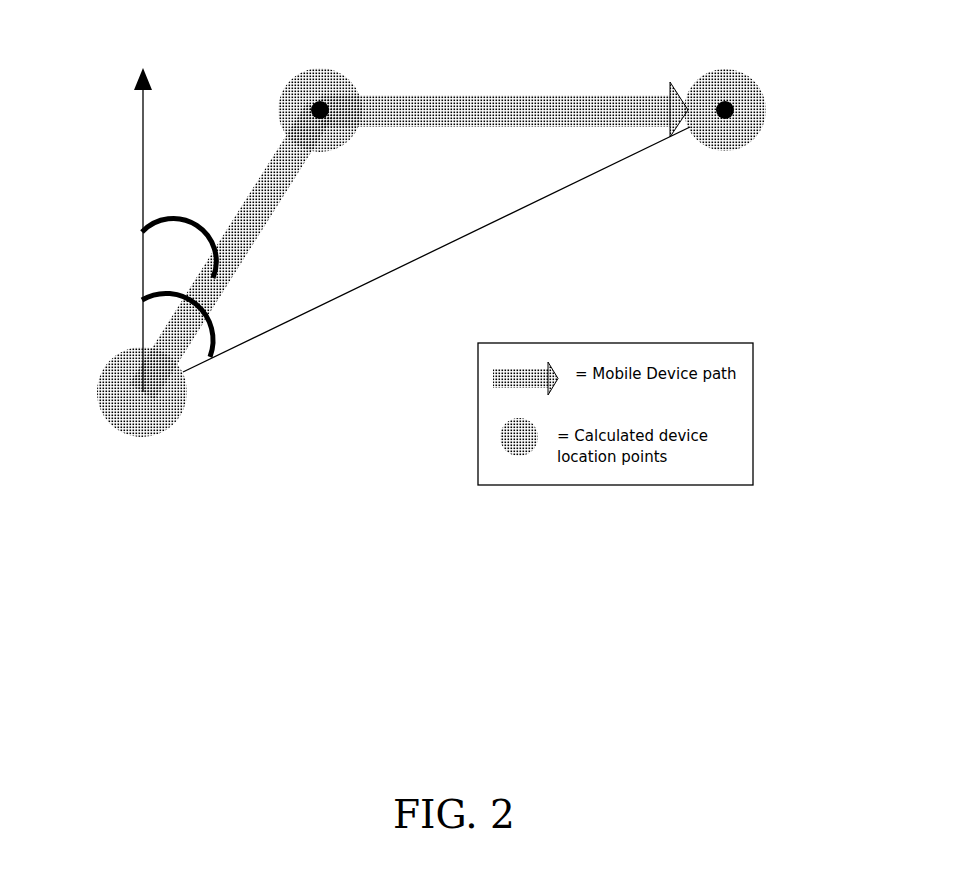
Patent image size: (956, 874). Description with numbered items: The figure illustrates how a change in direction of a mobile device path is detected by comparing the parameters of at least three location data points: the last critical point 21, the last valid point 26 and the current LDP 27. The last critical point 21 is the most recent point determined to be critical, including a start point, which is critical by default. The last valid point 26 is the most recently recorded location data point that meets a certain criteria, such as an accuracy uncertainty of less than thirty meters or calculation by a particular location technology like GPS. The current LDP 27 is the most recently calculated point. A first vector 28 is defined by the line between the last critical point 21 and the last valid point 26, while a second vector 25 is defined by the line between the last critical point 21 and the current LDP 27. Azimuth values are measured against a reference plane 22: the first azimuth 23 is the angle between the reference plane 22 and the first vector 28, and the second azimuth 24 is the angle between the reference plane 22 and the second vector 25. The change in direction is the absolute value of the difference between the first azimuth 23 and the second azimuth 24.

The last critical point 21 is at (97, 392).
The reference plane 22 is at (143, 157).
The first azimuth 23 is at (172, 218).
The second azimuth 24 is at (217, 330).
The second vector 25 is at (512, 213).
The last valid point 26 is at (290, 80).
The current LDP 27 is at (756, 78).
The first vector 28 is at (277, 148).